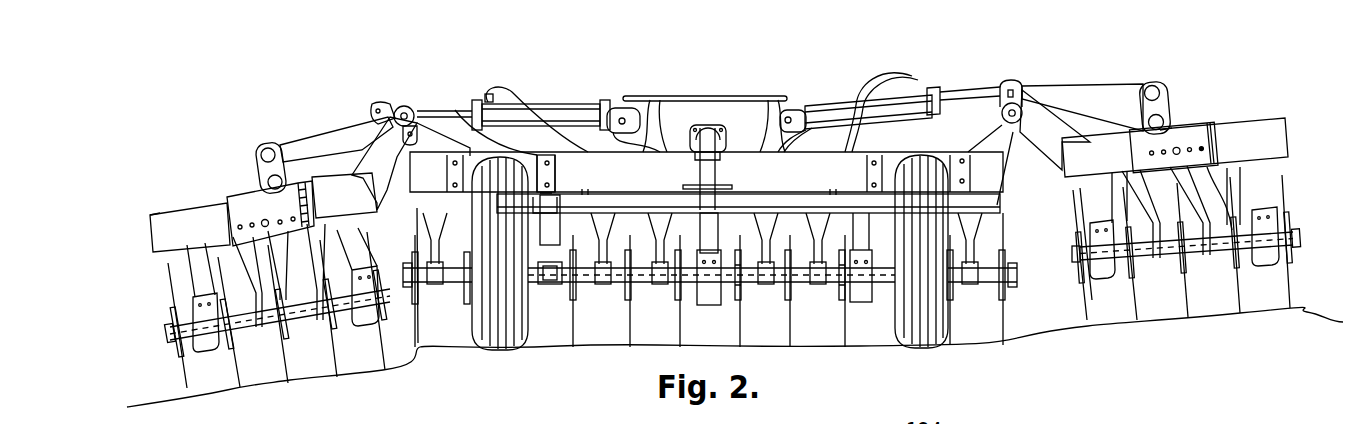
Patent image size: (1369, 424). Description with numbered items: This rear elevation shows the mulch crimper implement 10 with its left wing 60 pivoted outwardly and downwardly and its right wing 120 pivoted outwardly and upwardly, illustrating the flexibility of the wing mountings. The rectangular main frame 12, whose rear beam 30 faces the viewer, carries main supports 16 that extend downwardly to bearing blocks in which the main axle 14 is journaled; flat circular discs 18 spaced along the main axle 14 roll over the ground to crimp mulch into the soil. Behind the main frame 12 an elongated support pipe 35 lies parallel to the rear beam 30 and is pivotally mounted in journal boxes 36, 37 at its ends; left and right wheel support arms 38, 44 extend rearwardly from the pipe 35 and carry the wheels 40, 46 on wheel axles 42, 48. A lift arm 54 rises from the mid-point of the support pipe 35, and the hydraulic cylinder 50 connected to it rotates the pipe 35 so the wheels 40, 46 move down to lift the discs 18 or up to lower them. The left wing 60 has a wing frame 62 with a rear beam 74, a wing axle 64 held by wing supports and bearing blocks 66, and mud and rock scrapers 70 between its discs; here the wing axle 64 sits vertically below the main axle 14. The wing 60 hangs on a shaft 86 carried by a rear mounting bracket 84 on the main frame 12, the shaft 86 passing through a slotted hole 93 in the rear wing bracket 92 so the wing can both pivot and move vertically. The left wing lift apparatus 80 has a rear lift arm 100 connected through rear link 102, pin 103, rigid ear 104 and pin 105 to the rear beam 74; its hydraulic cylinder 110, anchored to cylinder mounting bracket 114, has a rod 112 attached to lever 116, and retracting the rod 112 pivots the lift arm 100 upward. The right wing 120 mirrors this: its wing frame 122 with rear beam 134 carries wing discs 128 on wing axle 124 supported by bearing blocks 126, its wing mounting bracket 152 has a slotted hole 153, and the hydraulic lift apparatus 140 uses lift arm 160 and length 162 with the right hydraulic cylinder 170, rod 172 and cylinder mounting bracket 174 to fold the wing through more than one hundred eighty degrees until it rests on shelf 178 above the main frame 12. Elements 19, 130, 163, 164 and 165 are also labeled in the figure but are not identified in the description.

The mulch crimper implement 10 is at (710, 82).
The main frame 12 is at (740, 147).
The main axle 14 is at (750, 293).
The main supports 16 is at (712, 307).
The flat circular discs 18 is at (630, 330).
The disc gang standard 19 is at (665, 290).
The rear beam 30 is at (547, 155).
The elongated support pipe 35 is at (800, 193).
The journal box 36 is at (563, 193).
The journal box 37 is at (988, 220).
The left wheel support arm 38 is at (560, 240).
The wheel 40 is at (500, 353).
The wheel axle 42 is at (538, 273).
The right wheel support arm 44 is at (833, 270).
The wheel 46 is at (950, 320).
The wheel axle 48 is at (877, 277).
The hydraulic cylinder 50 is at (708, 125).
The lift arm 54 is at (702, 170).
The left extension wing 60 is at (277, 223).
The wing frame 62 is at (152, 253).
The wing axle 64 is at (287, 343).
The wing supports and bearing blocks 66 is at (193, 280).
The mud and rock scrapers 70 is at (337, 370).
The rear beam 74 is at (150, 216).
The left wing lift apparatus 80 is at (391, 89).
The rear mounting bracket 84 is at (384, 184).
The shaft 86 is at (406, 106).
The rear wing bracket 92 is at (370, 120).
The slotted hole 93 is at (478, 108).
The rear lift arm 100 is at (337, 132).
The rear link 102 is at (238, 145).
The pin 103 is at (263, 148).
The rigid ear 104 is at (262, 190).
The pin 105 is at (266, 183).
The hydraulic cylinder 110 is at (537, 100).
The rod 112 is at (420, 110).
The cylinder mounting bracket 114 is at (628, 110).
The rigid bracket or lever 116 is at (372, 117).
The right extension wing 120 is at (1130, 187).
The wing frame 122 is at (1288, 158).
The wing axle 124 is at (1177, 262).
The wing support and bearing blocks 126 is at (1080, 190).
The wing discs 128 is at (1265, 303).
The disc blade 130 is at (1217, 268).
The rear beam 134 is at (1270, 118).
The hydraulic lift apparatus 140 is at (1033, 75).
The wing mounting bracket 152 is at (1040, 147).
The slotted hole 153 is at (1017, 83).
The lift arm 160 is at (1102, 85).
The length 162 is at (1183, 78).
The upper adjustment hole 163 is at (1150, 83).
The bracket bolt 164 is at (1167, 127).
The lower adjustment hole 165 is at (1165, 117).
The right hydraulic cylinder 170 is at (847, 98).
The rod 172 is at (953, 88).
The cylinder mounting bracket 174 is at (777, 110).
The shelf 178 is at (647, 96).